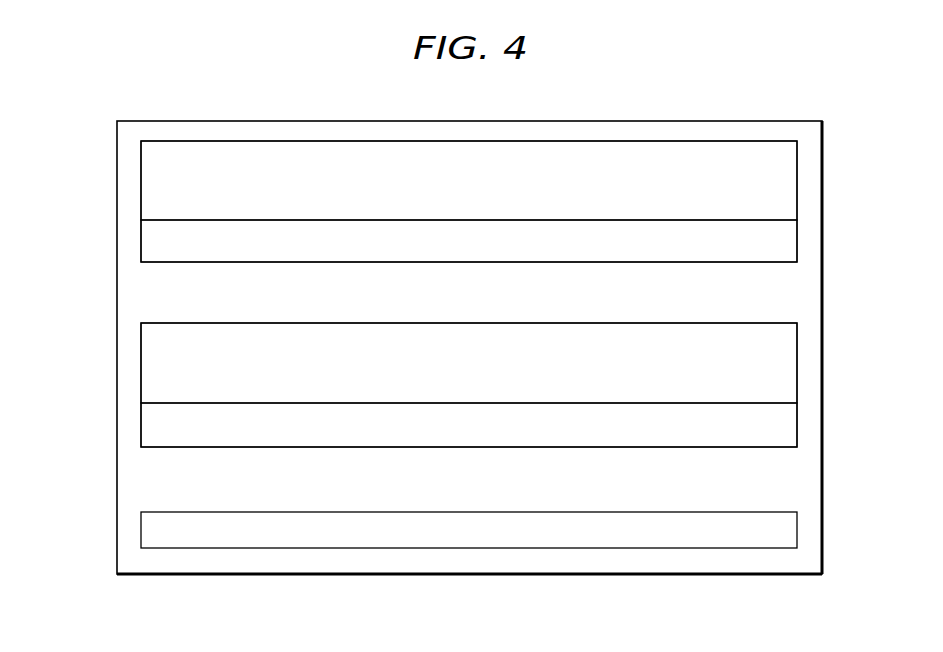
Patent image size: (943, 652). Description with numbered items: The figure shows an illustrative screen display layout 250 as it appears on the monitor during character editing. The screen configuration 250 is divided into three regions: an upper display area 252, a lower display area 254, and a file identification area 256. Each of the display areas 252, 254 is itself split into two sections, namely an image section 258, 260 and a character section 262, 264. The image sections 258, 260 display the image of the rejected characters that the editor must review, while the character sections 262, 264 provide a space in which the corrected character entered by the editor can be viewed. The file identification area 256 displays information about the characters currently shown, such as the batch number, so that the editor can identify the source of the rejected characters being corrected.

The screen display layout 250 is at (80, 145).
The upper display area 252 is at (128, 177).
The lower display area 254 is at (128, 375).
The file identification area 256 is at (565, 163).
The image section 258 is at (770, 344).
The image section 260 is at (160, 238).
The character section 262 is at (160, 423).
The character section 264 is at (155, 530).